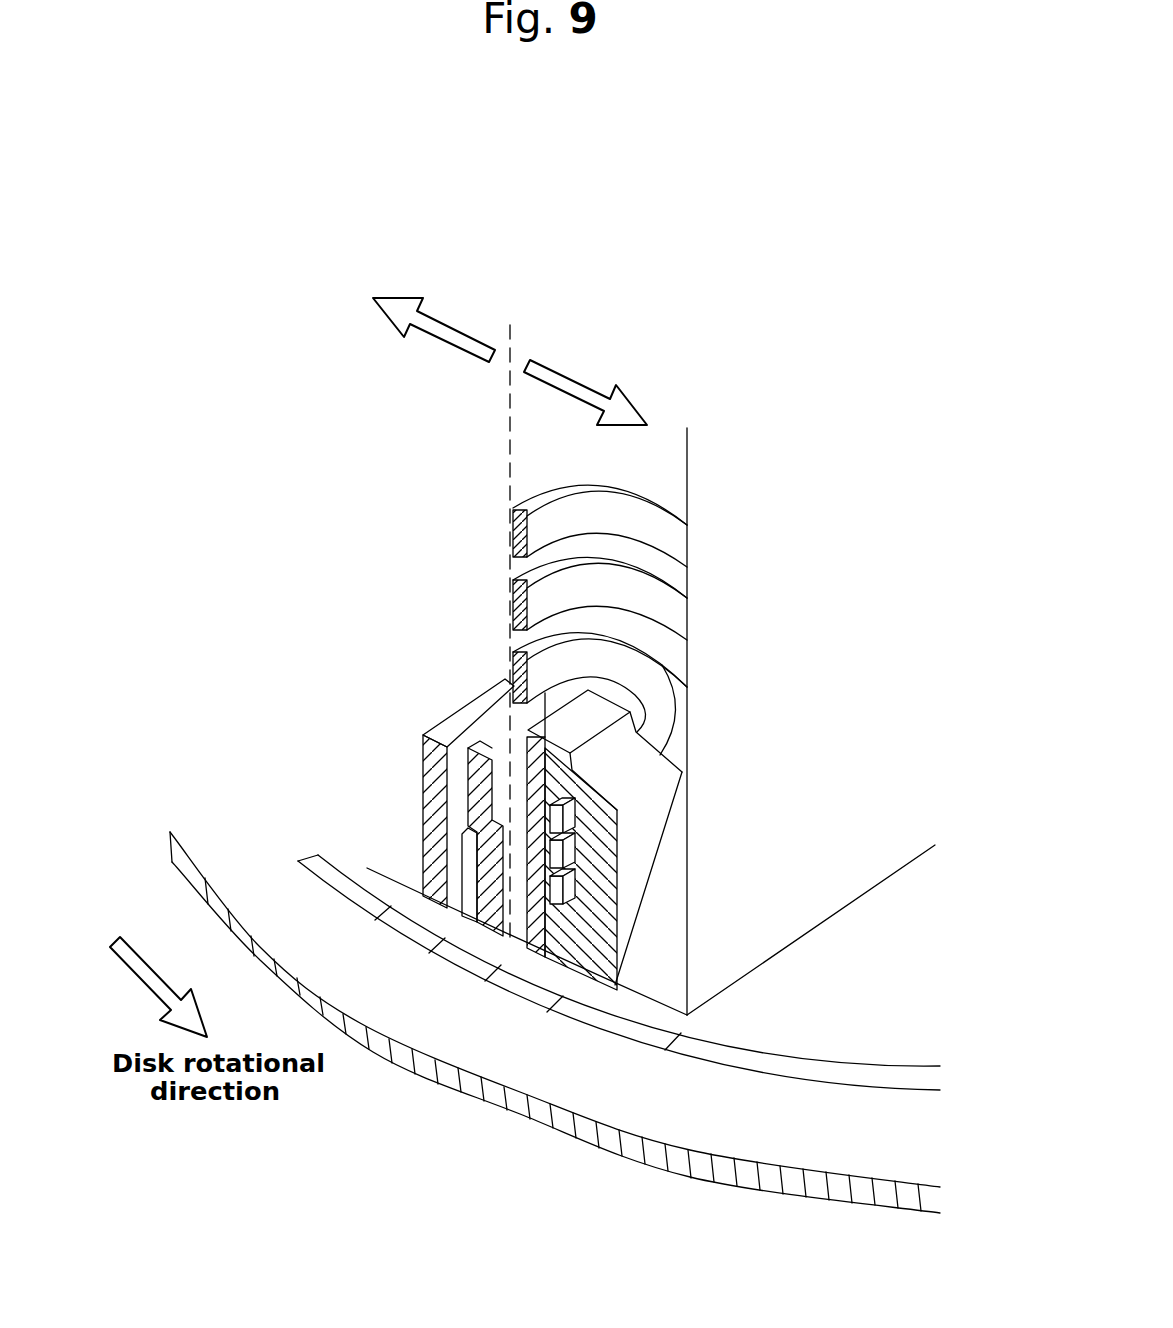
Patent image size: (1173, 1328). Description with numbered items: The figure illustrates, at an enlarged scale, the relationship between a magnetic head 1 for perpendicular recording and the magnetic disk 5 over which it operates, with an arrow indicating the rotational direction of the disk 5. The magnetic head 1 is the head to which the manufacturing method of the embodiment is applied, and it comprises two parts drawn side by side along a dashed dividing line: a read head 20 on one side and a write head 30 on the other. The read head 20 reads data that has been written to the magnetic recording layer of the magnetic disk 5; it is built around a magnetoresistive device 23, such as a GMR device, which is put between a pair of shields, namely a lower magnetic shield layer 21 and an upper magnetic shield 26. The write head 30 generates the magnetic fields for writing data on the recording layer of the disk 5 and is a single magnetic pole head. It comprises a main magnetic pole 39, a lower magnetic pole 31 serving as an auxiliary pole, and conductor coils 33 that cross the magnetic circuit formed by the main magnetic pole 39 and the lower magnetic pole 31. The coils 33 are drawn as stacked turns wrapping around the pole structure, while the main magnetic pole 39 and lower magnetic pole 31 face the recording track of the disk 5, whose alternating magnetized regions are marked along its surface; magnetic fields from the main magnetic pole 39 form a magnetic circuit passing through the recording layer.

The magnetic head 1 is at (872, 362).
The magnetic disk 5 is at (571, 1128).
The read head 20 is at (358, 545).
The lower magnetic shield layer 21 is at (440, 728).
The magnetoresistive device 23 is at (455, 928).
The upper magnetic shield 26 is at (468, 757).
The write head 30 is at (689, 570).
The lower magnetic pole 31 is at (557, 922).
The conductor coils 33 is at (658, 703).
The main magnetic pole 39 is at (592, 988).